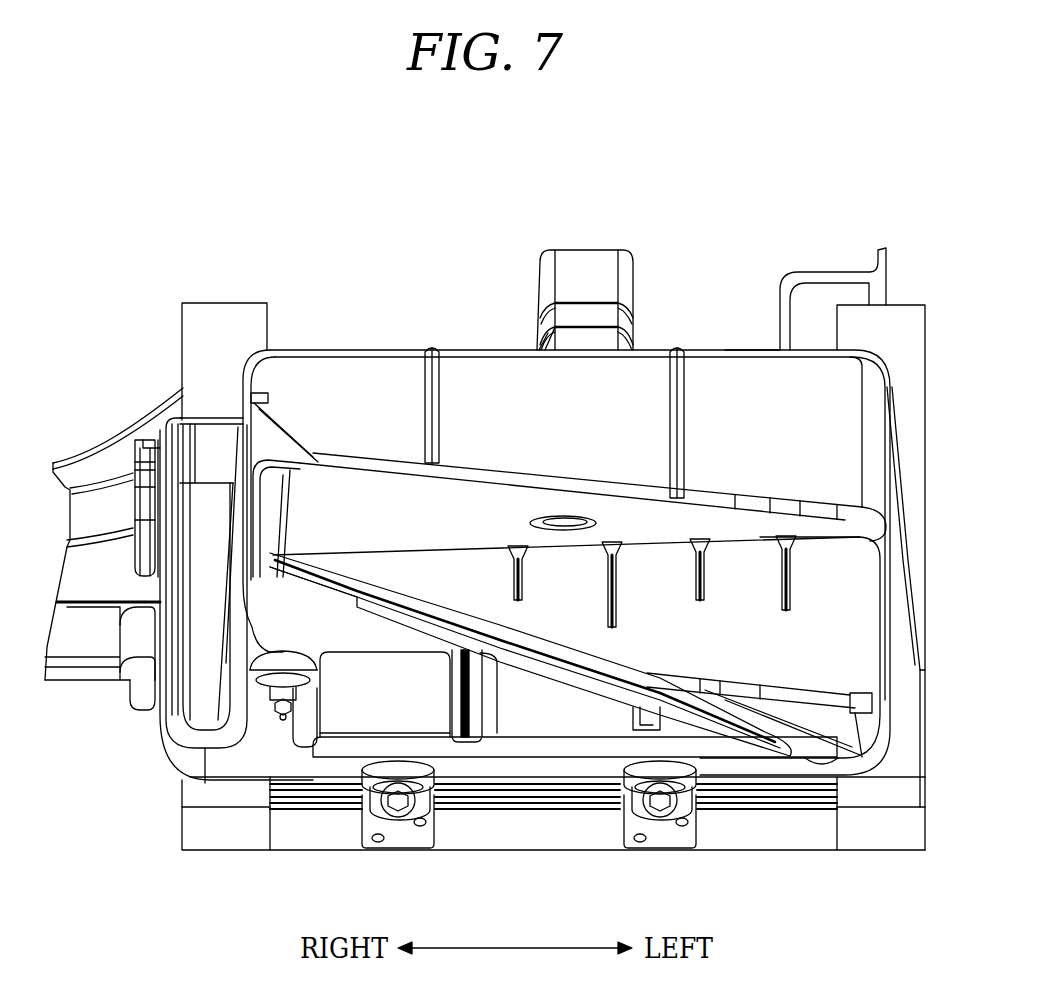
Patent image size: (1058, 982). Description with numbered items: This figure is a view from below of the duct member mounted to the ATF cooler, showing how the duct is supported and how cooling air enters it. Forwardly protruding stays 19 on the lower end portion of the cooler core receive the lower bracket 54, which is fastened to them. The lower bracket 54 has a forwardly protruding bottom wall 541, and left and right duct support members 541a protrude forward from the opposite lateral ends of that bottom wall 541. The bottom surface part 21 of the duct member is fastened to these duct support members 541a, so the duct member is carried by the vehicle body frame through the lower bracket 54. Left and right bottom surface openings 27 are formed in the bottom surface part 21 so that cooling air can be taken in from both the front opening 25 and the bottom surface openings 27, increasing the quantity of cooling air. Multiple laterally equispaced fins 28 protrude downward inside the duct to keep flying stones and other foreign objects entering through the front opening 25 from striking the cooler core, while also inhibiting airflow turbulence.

The stay 19 is at (393, 838).
The bottom surface part 21 is at (475, 742).
The front opening 25 is at (424, 513).
The bottom surface opening 27 is at (330, 703).
The fin 28 is at (698, 553).
The lower bracket 54 is at (167, 768).
The bottom wall 541 is at (513, 773).
The duct support member 541a is at (260, 695).